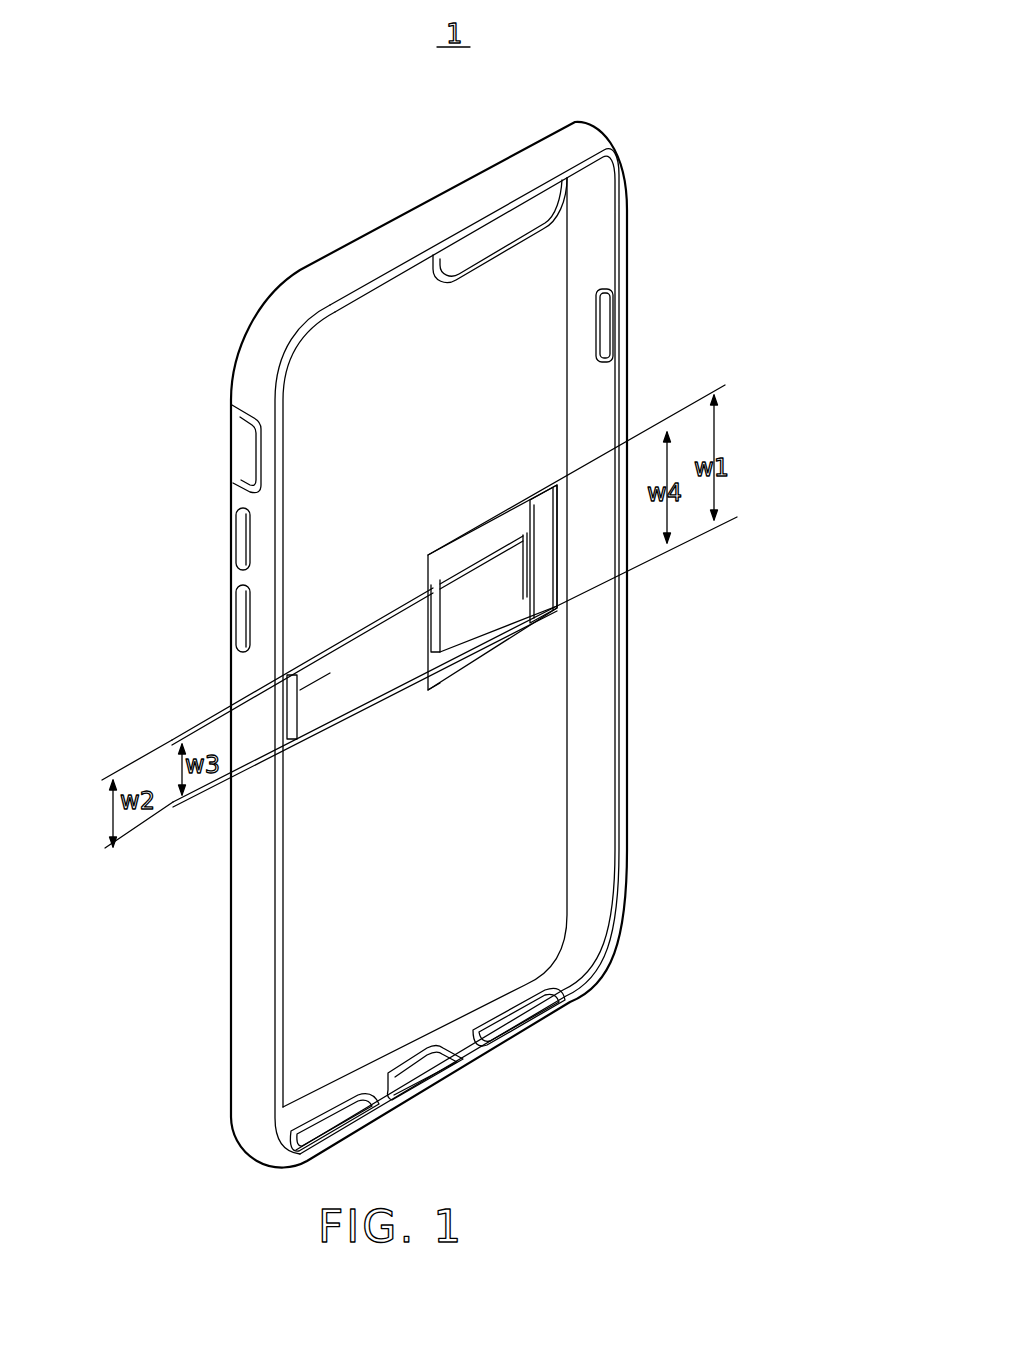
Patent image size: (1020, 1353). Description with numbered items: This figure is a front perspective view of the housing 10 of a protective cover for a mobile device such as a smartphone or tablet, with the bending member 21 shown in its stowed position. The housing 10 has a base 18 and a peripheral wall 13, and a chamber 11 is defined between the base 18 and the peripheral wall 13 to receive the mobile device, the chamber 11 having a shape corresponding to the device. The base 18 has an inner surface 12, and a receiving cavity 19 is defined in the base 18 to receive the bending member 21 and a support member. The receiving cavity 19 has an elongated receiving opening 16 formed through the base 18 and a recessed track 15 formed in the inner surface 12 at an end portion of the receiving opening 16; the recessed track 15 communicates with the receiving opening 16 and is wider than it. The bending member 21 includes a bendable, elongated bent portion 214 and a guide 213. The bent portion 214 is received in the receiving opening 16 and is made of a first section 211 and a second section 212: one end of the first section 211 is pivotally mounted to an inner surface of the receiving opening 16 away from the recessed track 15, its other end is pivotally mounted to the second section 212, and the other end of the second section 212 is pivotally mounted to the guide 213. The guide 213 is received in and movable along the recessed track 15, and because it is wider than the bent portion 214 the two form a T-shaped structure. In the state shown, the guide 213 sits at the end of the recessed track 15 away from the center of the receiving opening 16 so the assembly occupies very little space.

The housing 10 is at (586, 113).
The chamber 11 is at (297, 372).
The inner surface 12 is at (540, 430).
The peripheral wall 13 is at (250, 673).
The recessed track 15 is at (477, 643).
The receiving opening 16 is at (316, 650).
The base 18 is at (538, 316).
The receiving cavity 19 is at (470, 682).
The bending member 21 is at (317, 727).
The first section 211 is at (347, 685).
The second section 212 is at (497, 600).
The guide 213 is at (542, 607).
The bent portion 214 is at (447, 668).